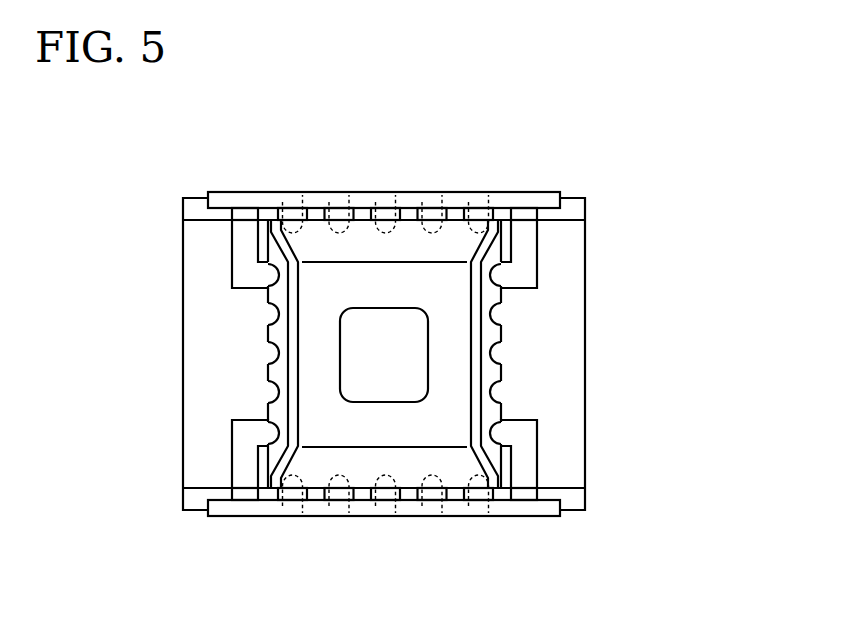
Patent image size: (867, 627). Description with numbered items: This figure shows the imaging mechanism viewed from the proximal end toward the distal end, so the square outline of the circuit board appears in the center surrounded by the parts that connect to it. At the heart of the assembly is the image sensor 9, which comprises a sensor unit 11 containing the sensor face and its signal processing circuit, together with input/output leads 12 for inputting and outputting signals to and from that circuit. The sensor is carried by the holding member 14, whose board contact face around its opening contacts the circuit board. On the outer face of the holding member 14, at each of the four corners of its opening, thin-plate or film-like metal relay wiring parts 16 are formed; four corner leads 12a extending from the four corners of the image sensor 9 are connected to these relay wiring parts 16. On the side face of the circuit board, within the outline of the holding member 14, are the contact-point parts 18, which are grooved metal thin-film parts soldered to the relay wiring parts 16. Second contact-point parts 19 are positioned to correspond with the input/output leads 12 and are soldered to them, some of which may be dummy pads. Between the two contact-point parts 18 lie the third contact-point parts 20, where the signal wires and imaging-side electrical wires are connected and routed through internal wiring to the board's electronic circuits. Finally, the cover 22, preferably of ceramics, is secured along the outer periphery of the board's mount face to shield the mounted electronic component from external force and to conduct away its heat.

The image sensor 9 is at (449, 324).
The sensor unit 11 is at (583, 210).
The input/output leads 12 is at (385, 355).
The corner leads 12a is at (246, 214).
The holding member 14 is at (193, 227).
The relay wiring parts 16 is at (384, 354).
The contact-point parts 18 is at (385, 354).
The second contact-point parts 19 is at (373, 354).
The third contact-point parts 20 is at (384, 353).
The cover 22 is at (268, 372).